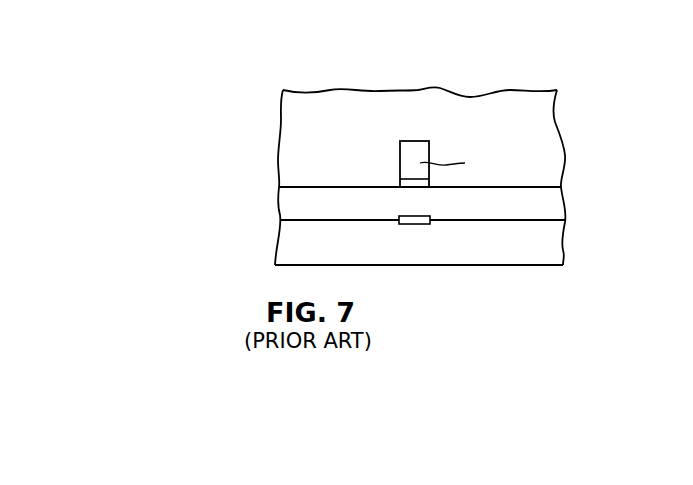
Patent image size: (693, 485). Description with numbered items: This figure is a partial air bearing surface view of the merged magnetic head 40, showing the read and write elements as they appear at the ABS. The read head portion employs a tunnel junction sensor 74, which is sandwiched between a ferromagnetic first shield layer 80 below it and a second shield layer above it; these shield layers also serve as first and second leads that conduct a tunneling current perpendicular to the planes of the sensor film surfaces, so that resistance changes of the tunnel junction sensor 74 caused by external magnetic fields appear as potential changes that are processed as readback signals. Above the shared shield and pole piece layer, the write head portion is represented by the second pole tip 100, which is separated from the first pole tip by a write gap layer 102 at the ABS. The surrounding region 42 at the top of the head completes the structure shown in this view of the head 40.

The merged magnetic head 40 is at (577, 102).
The upper layer 42 is at (287, 117).
The first shield layer 80 is at (528, 253).
The second pole tip 100 is at (420, 145).
The write gap layer 102 is at (413, 181).
The tunnel junction sensor 74 is at (414, 224).